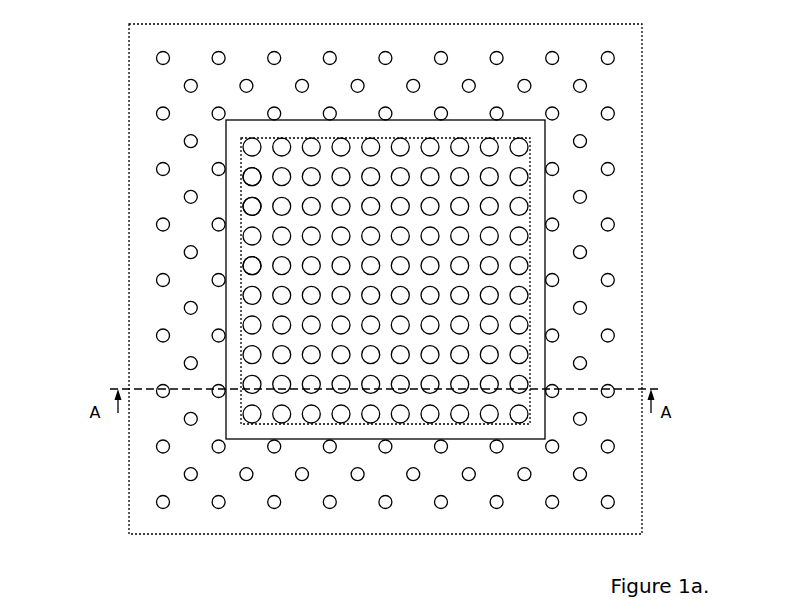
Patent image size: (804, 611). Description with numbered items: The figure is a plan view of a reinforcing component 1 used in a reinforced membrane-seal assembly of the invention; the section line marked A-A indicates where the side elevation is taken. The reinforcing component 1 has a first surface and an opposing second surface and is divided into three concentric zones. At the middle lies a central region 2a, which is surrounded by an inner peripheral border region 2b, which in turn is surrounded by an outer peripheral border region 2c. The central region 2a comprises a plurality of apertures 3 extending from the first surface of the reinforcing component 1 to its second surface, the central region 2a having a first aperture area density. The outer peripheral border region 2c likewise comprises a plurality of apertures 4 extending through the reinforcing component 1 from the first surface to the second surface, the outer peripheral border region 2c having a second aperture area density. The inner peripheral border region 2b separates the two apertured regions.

The reinforcing component 1 is at (661, 100).
The central region 2a is at (504, 214).
The inner peripheral border region 2b is at (536, 266).
The outer peripheral border region 2c is at (613, 309).
The apertures 3 is at (264, 178).
The apertures 4 is at (587, 420).